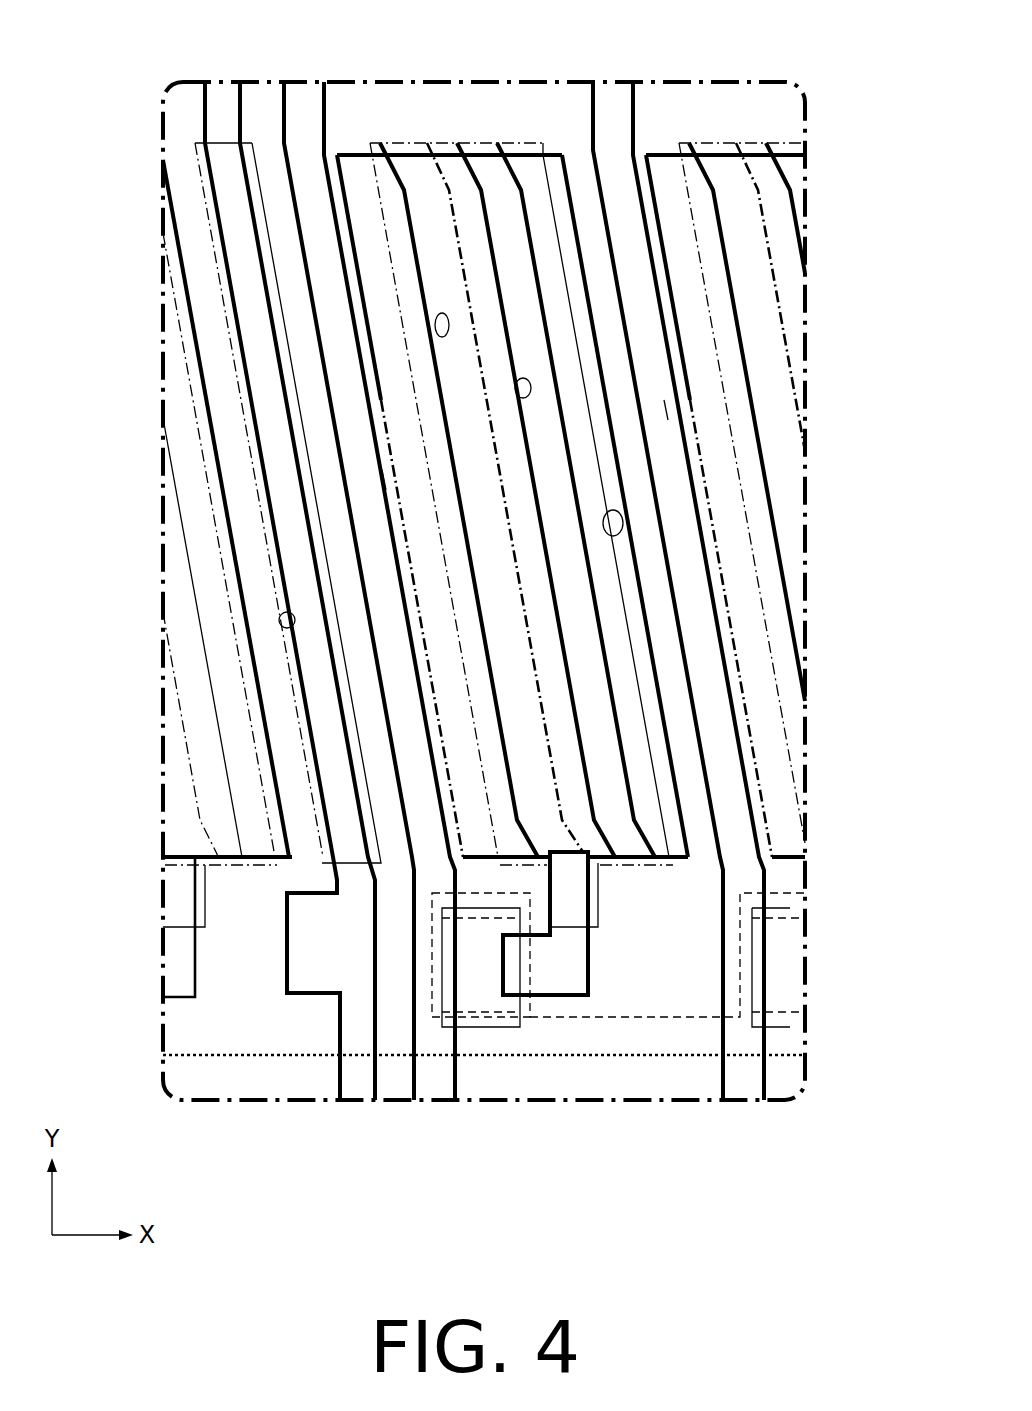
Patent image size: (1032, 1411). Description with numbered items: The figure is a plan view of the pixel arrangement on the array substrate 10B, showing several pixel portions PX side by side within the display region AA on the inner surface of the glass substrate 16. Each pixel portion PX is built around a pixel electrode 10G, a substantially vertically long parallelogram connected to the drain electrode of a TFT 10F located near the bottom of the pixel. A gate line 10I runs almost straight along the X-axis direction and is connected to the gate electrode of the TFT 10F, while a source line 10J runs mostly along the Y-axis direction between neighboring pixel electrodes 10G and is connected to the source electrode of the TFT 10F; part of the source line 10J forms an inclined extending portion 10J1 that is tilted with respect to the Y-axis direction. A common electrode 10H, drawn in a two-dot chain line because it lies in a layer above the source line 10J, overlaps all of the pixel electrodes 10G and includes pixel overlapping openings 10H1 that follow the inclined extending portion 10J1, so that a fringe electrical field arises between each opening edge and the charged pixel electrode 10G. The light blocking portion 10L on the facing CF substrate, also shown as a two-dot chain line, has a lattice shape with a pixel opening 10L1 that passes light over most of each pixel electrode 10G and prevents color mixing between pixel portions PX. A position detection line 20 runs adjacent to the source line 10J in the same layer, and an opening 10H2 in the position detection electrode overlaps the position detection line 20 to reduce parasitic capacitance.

The source line 10J is at (300, 116).
The light blocking portion 10L is at (617, 368).
The array substrate 10B is at (784, 879).
The common electrode 10H is at (495, 130).
The pixel electrode 10G is at (523, 143).
The display region AA is at (750, 268).
The position detection line 20 is at (223, 112).
The pixel portion PX is at (186, 130).
The glass substrate 16 is at (228, 950).
The TFT 10F is at (492, 1030).
The gate line 10I is at (215, 1058).
The pixel overlapping opening 10H1 is at (515, 390).
The opening 10H2 is at (285, 622).
The pixel opening 10L1 is at (623, 535).
The inclined extending portion 10J1 is at (360, 476).